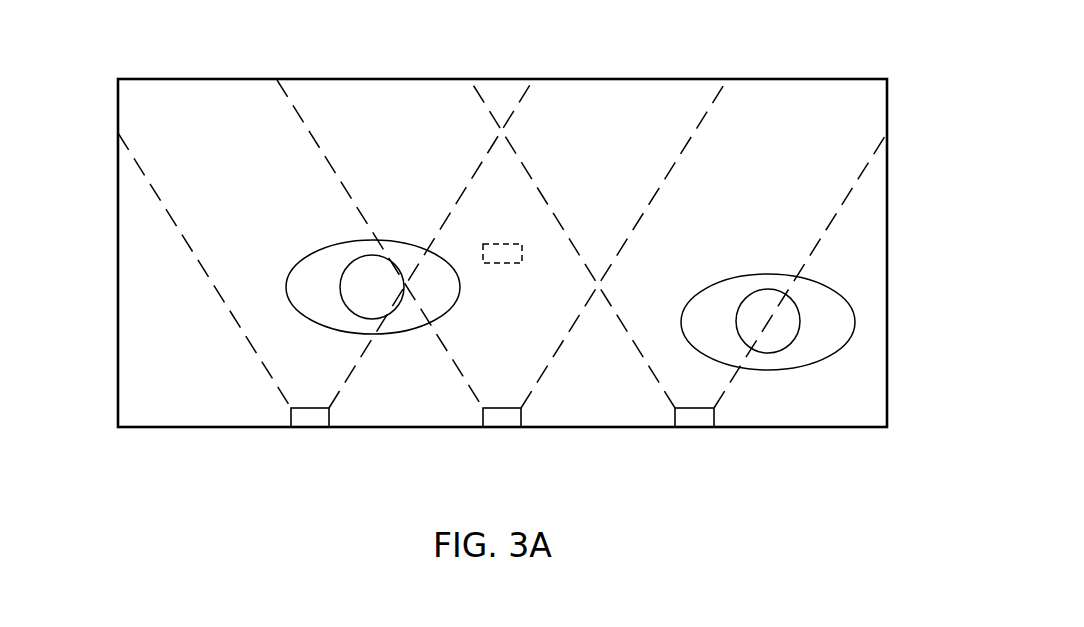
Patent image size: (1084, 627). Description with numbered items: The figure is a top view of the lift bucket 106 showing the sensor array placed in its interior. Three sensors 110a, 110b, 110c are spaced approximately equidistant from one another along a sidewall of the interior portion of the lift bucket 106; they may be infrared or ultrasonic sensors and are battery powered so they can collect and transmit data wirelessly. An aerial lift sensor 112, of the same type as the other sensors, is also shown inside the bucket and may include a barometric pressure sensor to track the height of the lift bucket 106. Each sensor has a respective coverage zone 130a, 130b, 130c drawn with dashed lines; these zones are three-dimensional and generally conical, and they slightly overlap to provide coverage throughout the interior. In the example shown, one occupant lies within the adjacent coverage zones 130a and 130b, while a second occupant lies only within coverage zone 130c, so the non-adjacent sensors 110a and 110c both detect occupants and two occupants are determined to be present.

The lift bucket 106 is at (889, 102).
The sensor 110a is at (312, 427).
The sensor 110b is at (504, 427).
The sensor 110c is at (694, 427).
The aerial lift sensor 112 is at (502, 263).
The coverage zone 130a is at (145, 175).
The coverage zone 130b is at (293, 103).
The coverage zone 130c is at (529, 173).